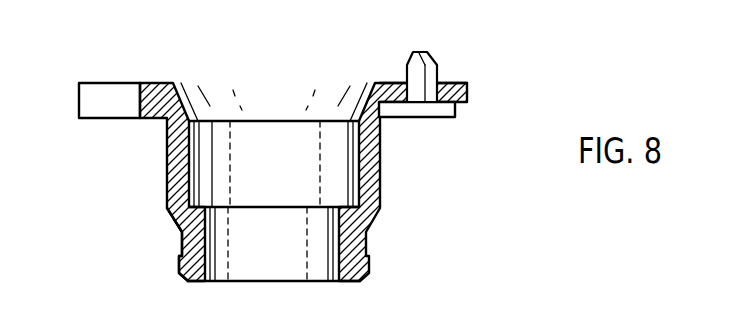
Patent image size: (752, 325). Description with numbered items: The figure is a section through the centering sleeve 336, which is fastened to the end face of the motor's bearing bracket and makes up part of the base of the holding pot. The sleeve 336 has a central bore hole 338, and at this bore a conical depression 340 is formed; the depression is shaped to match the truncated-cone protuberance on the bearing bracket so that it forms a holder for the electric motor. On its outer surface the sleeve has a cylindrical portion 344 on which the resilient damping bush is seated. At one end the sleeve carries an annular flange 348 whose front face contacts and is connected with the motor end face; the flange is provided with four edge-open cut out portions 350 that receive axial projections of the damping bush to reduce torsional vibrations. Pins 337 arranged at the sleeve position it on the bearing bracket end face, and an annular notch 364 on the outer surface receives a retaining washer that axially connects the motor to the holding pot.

The sleeve 336 is at (321, 143).
The pins 337 is at (432, 52).
The central bore hole 338 is at (199, 171).
The conical depression 340 is at (178, 82).
The cylindrical portion 344 is at (381, 150).
The annular flange 348 is at (468, 92).
The cut out portions 350 is at (97, 93).
The annular notch 364 is at (183, 236).